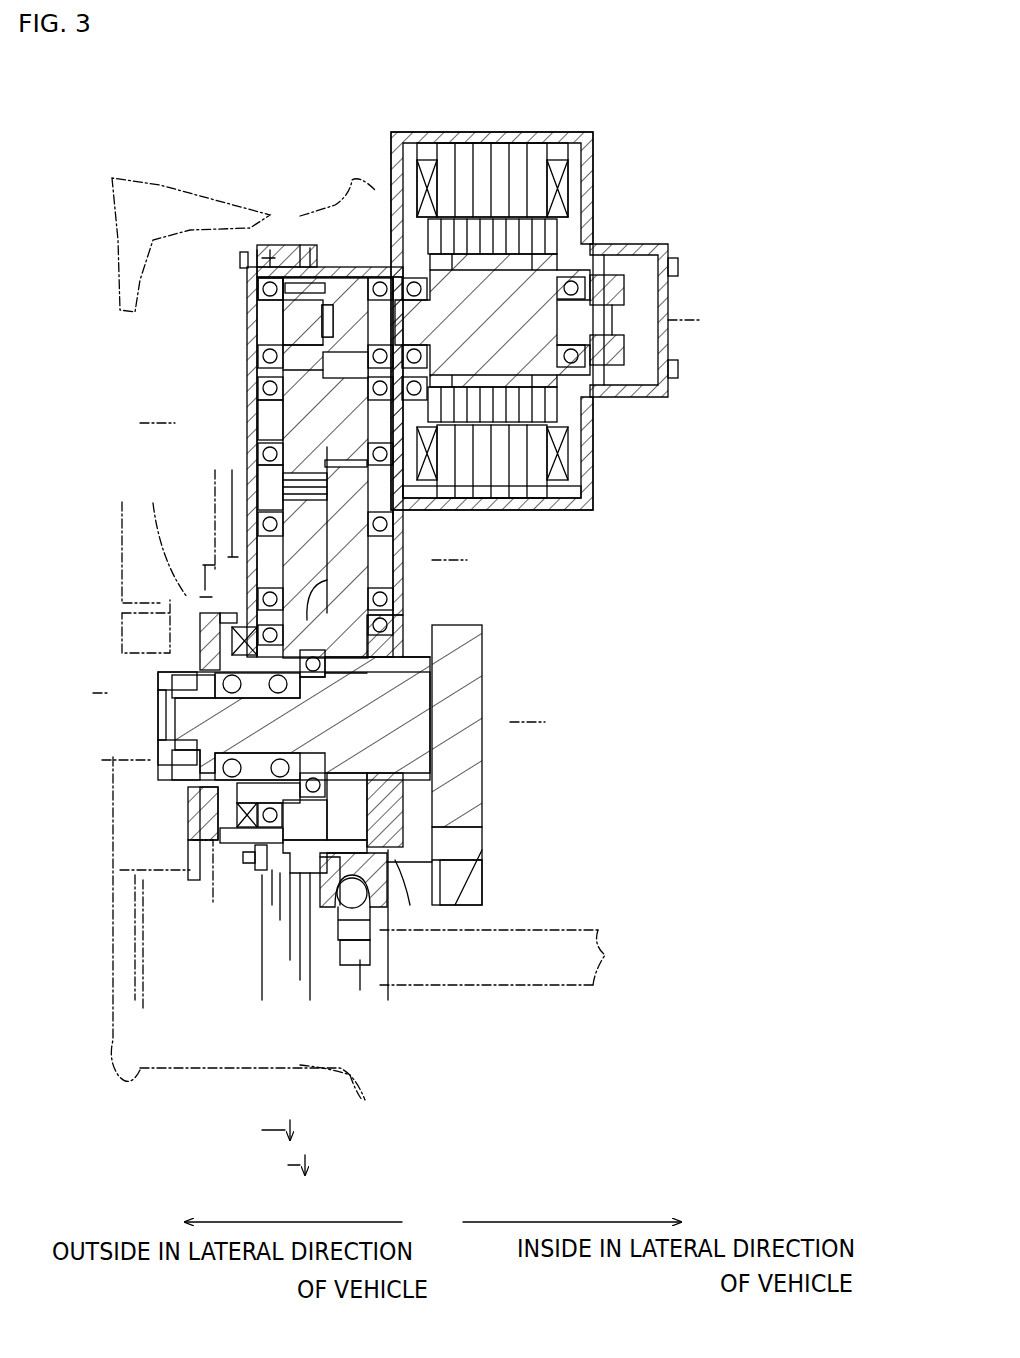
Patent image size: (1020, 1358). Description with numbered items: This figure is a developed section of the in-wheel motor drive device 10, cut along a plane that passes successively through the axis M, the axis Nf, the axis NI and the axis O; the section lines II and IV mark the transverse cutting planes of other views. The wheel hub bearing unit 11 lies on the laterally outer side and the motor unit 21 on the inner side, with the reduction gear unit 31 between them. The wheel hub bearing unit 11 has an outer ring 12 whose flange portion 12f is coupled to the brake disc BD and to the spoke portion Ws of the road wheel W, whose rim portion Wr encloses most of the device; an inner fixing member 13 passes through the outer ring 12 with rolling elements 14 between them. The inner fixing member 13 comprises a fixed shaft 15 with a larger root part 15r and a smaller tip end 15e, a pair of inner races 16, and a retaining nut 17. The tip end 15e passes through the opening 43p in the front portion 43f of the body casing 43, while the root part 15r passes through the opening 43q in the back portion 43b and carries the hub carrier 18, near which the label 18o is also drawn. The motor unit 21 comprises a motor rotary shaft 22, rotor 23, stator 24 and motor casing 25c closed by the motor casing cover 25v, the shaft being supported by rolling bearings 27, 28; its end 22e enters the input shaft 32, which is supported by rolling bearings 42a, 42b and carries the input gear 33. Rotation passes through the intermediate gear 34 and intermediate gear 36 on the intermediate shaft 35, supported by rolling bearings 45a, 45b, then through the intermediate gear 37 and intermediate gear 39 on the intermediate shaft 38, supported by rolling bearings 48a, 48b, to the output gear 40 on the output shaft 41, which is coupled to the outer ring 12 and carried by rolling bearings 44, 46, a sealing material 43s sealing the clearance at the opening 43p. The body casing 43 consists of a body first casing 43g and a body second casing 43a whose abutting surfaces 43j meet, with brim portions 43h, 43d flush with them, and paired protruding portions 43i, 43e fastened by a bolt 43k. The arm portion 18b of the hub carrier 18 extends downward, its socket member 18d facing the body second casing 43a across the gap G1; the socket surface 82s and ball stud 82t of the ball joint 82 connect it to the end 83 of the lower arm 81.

The in-wheel motor drive device 10 is at (603, 126).
The wheel hub bearing unit 11 is at (150, 735).
The outer ring 12 is at (192, 767).
The flange portion 12f is at (197, 813).
The inner fixing member 13 is at (150, 690).
The rolling elements 14 is at (420, 762).
The fixed shaft 15 is at (440, 748).
The tip end 15e is at (168, 717).
The root part 15r is at (420, 703).
The inner races 16 is at (420, 683).
The retaining nut 17 is at (170, 693).
The hub carrier 18 is at (460, 640).
The arm portion 18b is at (467, 880).
The socket member 18d is at (328, 900).
The knuckle opening 18o is at (412, 905).
The motor unit 21 is at (483, 130).
The motor rotary shaft 22 is at (543, 337).
The end of motor rotary shaft 22e is at (330, 267).
The rotor 23 is at (537, 235).
The stator 24 is at (540, 156).
The motor casing 25c is at (541, 132).
The motor casing cover 25v is at (590, 453).
The rolling bearing 27 is at (423, 353).
The rolling bearing 28 is at (570, 353).
The reduction gear unit 31 is at (243, 327).
The input shaft 32 is at (270, 323).
The input gear 33 is at (298, 280).
The intermediate gear 34 is at (297, 370).
The intermediate shaft 35 is at (347, 443).
The intermediate gear 36 is at (270, 423).
The intermediate gear 37 is at (267, 463).
The intermediate shaft 38 is at (265, 575).
The intermediate gear 39 is at (393, 585).
The output gear 40 is at (380, 850).
The output shaft 41 is at (250, 792).
The rolling bearing 42a is at (257, 290).
The rolling bearing 42b is at (380, 281).
The body casing 43 is at (250, 283).
The body second casing 43a is at (390, 890).
The back portion 43b is at (393, 610).
The brim portion 43d is at (305, 243).
The protruding portion 43e is at (307, 243).
The front portion 43f is at (247, 340).
The body first casing 43g is at (273, 893).
The brim portion 43h is at (273, 257).
The protruding portion 43i is at (253, 250).
The abutting surface 43j is at (273, 247).
The bolt 43k is at (267, 867).
The opening 43p is at (245, 652).
The opening 43q is at (380, 687).
The sealing material 43s is at (250, 840).
The rolling bearing 44 is at (270, 853).
The rolling bearing 45a is at (257, 450).
The rolling bearing 45b is at (393, 512).
The rolling bearing 46 is at (447, 800).
The rolling bearing 48a is at (265, 530).
The rolling bearing 48b is at (393, 540).
The lower arm 81 is at (586, 993).
The ball joint 82 is at (420, 920).
The socket surface 82s is at (348, 968).
The ball stud 82t is at (352, 945).
The end of lower arm 83 is at (365, 1000).
The axis M is at (694, 319).
The axis O is at (537, 721).
The axis NI is at (462, 559).
The axis Nf is at (141, 421).
The road wheel W is at (123, 483).
The rim portion Wr is at (346, 641).
The spoke portion Ws is at (118, 274).
The brake disc BD is at (207, 487).
The gap G1 is at (387, 862).
The cutting plane II- II is at (272, 1125).
The cutting plane IV- IV is at (287, 1161).